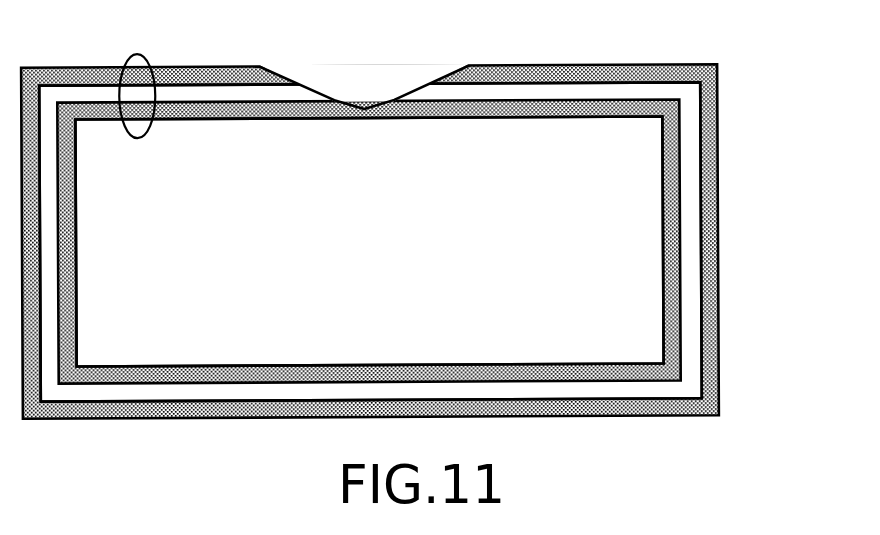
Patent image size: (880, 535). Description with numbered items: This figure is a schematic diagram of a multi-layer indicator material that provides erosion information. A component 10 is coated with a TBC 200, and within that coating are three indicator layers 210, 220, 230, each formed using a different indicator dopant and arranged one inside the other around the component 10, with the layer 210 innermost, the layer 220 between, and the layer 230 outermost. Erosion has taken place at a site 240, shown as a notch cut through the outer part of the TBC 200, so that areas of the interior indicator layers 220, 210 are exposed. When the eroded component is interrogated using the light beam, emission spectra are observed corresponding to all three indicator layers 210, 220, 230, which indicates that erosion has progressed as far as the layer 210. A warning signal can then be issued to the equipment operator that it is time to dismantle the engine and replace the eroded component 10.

The component 10 is at (642, 282).
The TBC 200 is at (135, 53).
The indicator layer 210 is at (667, 138).
The indicator layer 220 is at (688, 108).
The indicator layer 230 is at (710, 79).
The site 240 is at (398, 77).